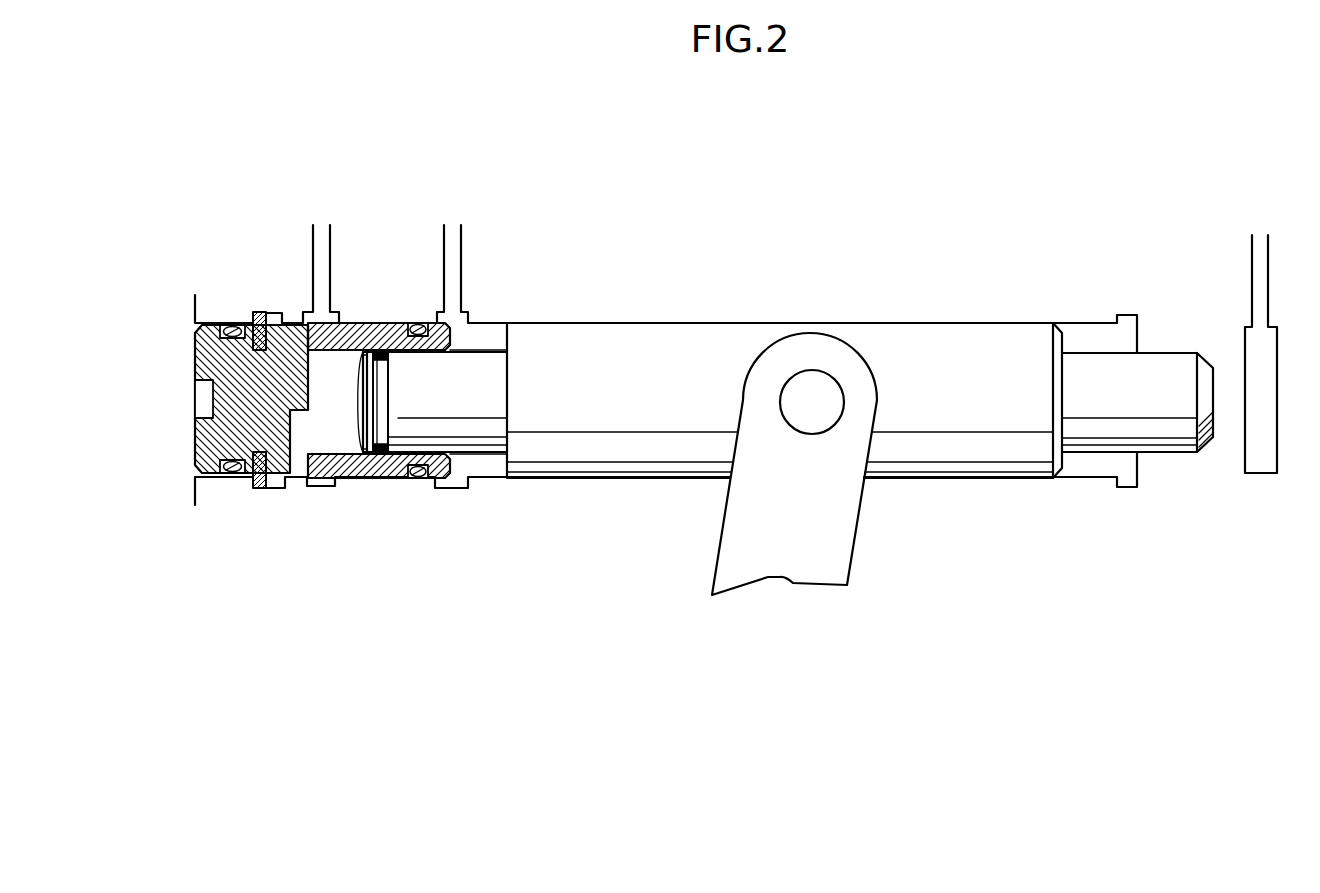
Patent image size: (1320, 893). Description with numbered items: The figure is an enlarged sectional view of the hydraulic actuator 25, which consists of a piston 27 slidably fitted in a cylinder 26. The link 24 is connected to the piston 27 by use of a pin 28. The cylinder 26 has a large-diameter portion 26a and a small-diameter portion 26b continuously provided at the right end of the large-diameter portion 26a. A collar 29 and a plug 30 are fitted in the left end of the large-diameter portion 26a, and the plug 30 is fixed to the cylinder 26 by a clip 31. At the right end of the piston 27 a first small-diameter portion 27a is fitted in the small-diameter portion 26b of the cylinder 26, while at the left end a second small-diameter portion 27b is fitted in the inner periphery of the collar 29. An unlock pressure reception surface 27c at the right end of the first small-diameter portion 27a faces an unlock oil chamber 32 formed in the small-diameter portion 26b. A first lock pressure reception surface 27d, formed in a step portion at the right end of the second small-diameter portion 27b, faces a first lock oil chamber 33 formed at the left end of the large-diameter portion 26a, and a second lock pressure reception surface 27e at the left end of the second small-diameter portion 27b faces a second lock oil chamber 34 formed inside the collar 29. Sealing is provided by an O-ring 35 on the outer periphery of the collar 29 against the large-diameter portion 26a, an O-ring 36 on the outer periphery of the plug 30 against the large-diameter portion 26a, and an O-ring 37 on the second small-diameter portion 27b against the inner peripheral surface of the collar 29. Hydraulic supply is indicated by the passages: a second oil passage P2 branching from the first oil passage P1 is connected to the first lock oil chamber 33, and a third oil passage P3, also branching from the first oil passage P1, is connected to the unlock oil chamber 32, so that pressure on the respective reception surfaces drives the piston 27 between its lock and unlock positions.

The link 24 is at (740, 510).
The hydraulic actuator 25 is at (808, 275).
The cylinder 26 is at (856, 366).
The large-diameter portion 26a is at (732, 334).
The small-diameter portion 26b is at (1178, 360).
The piston 27 is at (778, 384).
The first small-diameter portion 27a is at (1097, 367).
The second small-diameter portion 27b is at (478, 362).
The unlock pressure reception surface 27c is at (1222, 407).
The first lock pressure reception surface 27d is at (505, 330).
The second lock pressure reception surface 27e is at (360, 377).
The pin 28 is at (820, 378).
The collar 29 is at (395, 479).
The plug 30 is at (195, 437).
The clip 31 is at (258, 489).
The unlock oil chamber 32 is at (1245, 435).
The first lock oil chamber 33 is at (488, 479).
The second lock oil chamber 34 is at (325, 432).
The O-ring 35 is at (418, 479).
The O-ring 36 is at (230, 476).
The O-ring 37 is at (378, 455).
The first oil passage P1 is at (322, 252).
The second oil passage P2 is at (452, 252).
The third oil passage P3 is at (1260, 252).